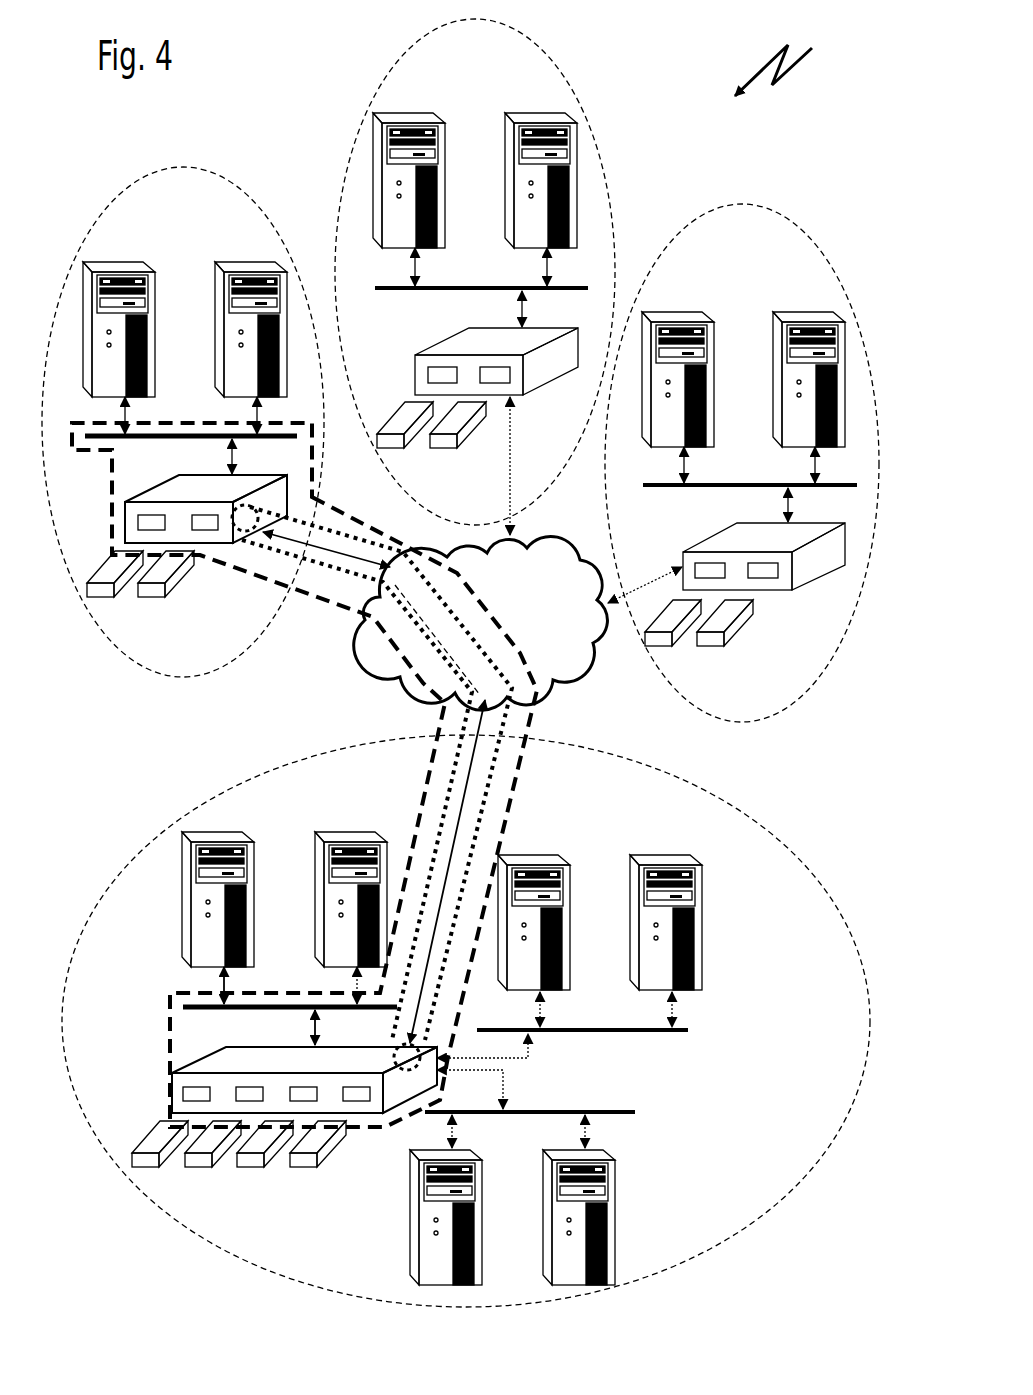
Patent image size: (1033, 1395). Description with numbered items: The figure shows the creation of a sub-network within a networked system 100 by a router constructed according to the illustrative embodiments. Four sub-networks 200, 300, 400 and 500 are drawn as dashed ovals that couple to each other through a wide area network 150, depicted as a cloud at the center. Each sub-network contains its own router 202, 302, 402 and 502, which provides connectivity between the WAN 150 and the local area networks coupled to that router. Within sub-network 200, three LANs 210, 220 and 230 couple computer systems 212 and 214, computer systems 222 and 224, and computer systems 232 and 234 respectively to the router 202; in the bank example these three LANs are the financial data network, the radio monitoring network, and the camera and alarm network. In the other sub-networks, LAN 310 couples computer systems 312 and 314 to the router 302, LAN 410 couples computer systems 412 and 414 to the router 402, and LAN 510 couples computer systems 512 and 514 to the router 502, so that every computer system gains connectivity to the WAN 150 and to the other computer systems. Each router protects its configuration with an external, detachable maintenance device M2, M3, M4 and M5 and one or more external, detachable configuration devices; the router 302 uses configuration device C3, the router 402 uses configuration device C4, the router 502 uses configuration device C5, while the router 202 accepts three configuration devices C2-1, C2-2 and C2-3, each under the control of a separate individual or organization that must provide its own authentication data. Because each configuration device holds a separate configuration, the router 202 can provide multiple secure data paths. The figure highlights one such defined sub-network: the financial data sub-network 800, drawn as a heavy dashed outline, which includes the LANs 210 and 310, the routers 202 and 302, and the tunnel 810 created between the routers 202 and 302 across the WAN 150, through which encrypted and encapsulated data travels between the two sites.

The networked system 100 is at (786, 56).
The wide area network (WAN) 150 is at (509, 637).
The sub-network 200 is at (200, 803).
The router 202 is at (172, 1090).
The LAN 210 is at (290, 1010).
The computer system 212 is at (182, 925).
The computer system 214 is at (385, 858).
The LAN 220 is at (567, 1030).
The computer system 222 is at (498, 950).
The computer system 224 is at (702, 925).
The LAN 230 is at (547, 1112).
The computer system 232 is at (410, 1245).
The computer system 234 is at (613, 1228).
The sub-network 300 is at (128, 183).
The router 302 is at (125, 520).
The LAN 310 is at (205, 440).
The computer system 312 is at (176, 300).
The computer system 314 is at (215, 330).
The sub-network 400 is at (387, 78).
The router 402 is at (415, 368).
The LAN 410 is at (515, 288).
The computer system 412 is at (468, 152).
The computer system 414 is at (505, 180).
The sub-network 500 is at (815, 258).
The router 502 is at (705, 537).
The LAN 510 is at (780, 485).
The computer system 512 is at (735, 350).
The computer system 514 is at (773, 378).
The financial data sub-network 800 is at (435, 765).
The tunnel 810 is at (338, 567).
The maintenance device M2 is at (140, 1168).
The configuration device C2-1 is at (195, 1168).
The configuration device C2-2 is at (250, 1168).
The configuration device C2-3 is at (303, 1168).
The maintenance device M3 is at (92, 600).
The configuration device C3 is at (155, 600).
The maintenance device M4 is at (384, 455).
The configuration device C4 is at (445, 452).
The maintenance device M5 is at (650, 648).
The configuration device C5 is at (715, 648).